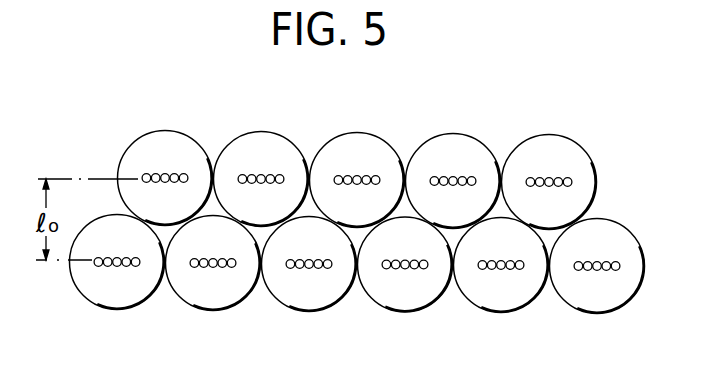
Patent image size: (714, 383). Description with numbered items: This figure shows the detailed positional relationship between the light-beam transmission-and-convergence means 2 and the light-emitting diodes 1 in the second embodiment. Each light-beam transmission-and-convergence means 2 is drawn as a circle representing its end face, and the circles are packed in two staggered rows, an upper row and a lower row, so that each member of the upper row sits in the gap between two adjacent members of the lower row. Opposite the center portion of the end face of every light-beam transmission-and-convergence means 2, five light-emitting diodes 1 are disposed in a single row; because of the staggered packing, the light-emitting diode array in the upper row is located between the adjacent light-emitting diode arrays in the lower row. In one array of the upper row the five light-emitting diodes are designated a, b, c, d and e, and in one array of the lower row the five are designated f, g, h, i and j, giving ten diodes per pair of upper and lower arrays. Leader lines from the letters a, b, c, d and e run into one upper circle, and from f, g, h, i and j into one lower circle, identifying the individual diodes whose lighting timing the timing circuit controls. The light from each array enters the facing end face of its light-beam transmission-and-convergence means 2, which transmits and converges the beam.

The light-emitting diode 1 is at (572, 182).
The light-beam transmission-and-convergence means 2 is at (540, 139).
The light-emitting diode a is at (242, 174).
The light-emitting diode b is at (252, 174).
The light-emitting diode c is at (261, 174).
The light-emitting diode d is at (270, 174).
The light-emitting diode e is at (280, 174).
The light-emitting diode f is at (289, 269).
The light-emitting diode g is at (299, 269).
The light-emitting diode h is at (309, 269).
The light-emitting diode i is at (318, 269).
The light-emitting diode j is at (328, 269).